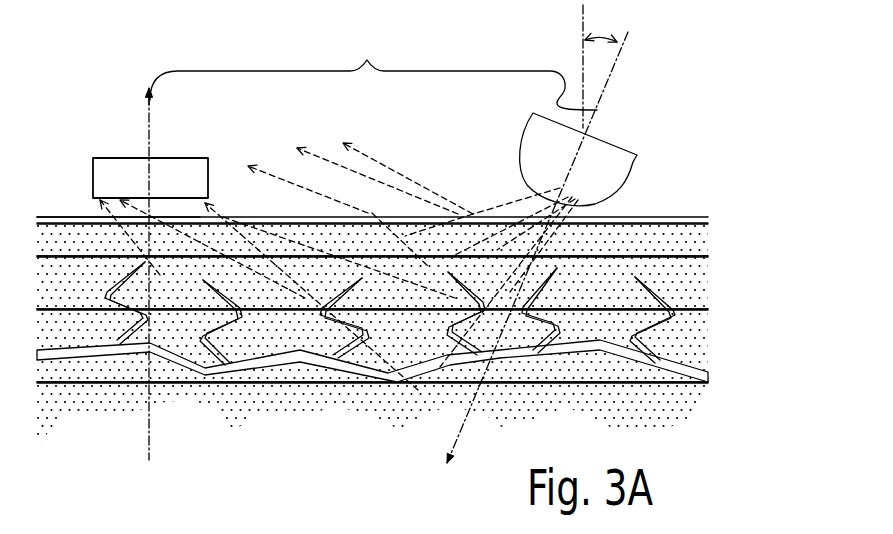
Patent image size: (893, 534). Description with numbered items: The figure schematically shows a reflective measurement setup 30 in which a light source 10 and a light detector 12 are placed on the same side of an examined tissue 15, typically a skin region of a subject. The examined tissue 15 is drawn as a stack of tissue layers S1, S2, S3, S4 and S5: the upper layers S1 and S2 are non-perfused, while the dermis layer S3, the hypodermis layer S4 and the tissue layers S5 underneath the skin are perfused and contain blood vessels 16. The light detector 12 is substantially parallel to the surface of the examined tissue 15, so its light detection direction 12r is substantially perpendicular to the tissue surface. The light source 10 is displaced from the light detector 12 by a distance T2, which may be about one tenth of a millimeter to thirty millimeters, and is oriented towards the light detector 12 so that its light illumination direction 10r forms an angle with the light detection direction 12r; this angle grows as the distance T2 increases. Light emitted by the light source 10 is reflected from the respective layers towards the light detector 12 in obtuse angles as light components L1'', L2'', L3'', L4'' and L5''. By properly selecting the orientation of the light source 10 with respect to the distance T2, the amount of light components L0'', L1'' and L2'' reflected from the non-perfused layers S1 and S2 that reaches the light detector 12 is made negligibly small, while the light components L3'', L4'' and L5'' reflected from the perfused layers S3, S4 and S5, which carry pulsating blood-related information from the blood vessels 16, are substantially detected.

The measurement setup 30 is at (761, 72).
The tissue layer S1 is at (717, 222).
The tissue layer S2 is at (723, 243).
The dermis layer S3 is at (723, 300).
The hypodermis layer S4 is at (727, 357).
The tissue layers underneath the skin S5 is at (737, 430).
The examined tissue 15 is at (75, 217).
The blood vessels 16 is at (130, 347).
The light detector 12 is at (127, 158).
The light detection direction 12r is at (153, 102).
The distance between the light source and the light detector T2 is at (373, 72).
The light source 10 is at (622, 149).
The light illumination direction 10r is at (558, 72).
The light component L0'' is at (451, 174).
The light component L1'' is at (411, 179).
The light component L2'' is at (394, 165).
The light component L3'' is at (336, 195).
The light component L4'' is at (212, 318).
The light component L5'' is at (311, 338).